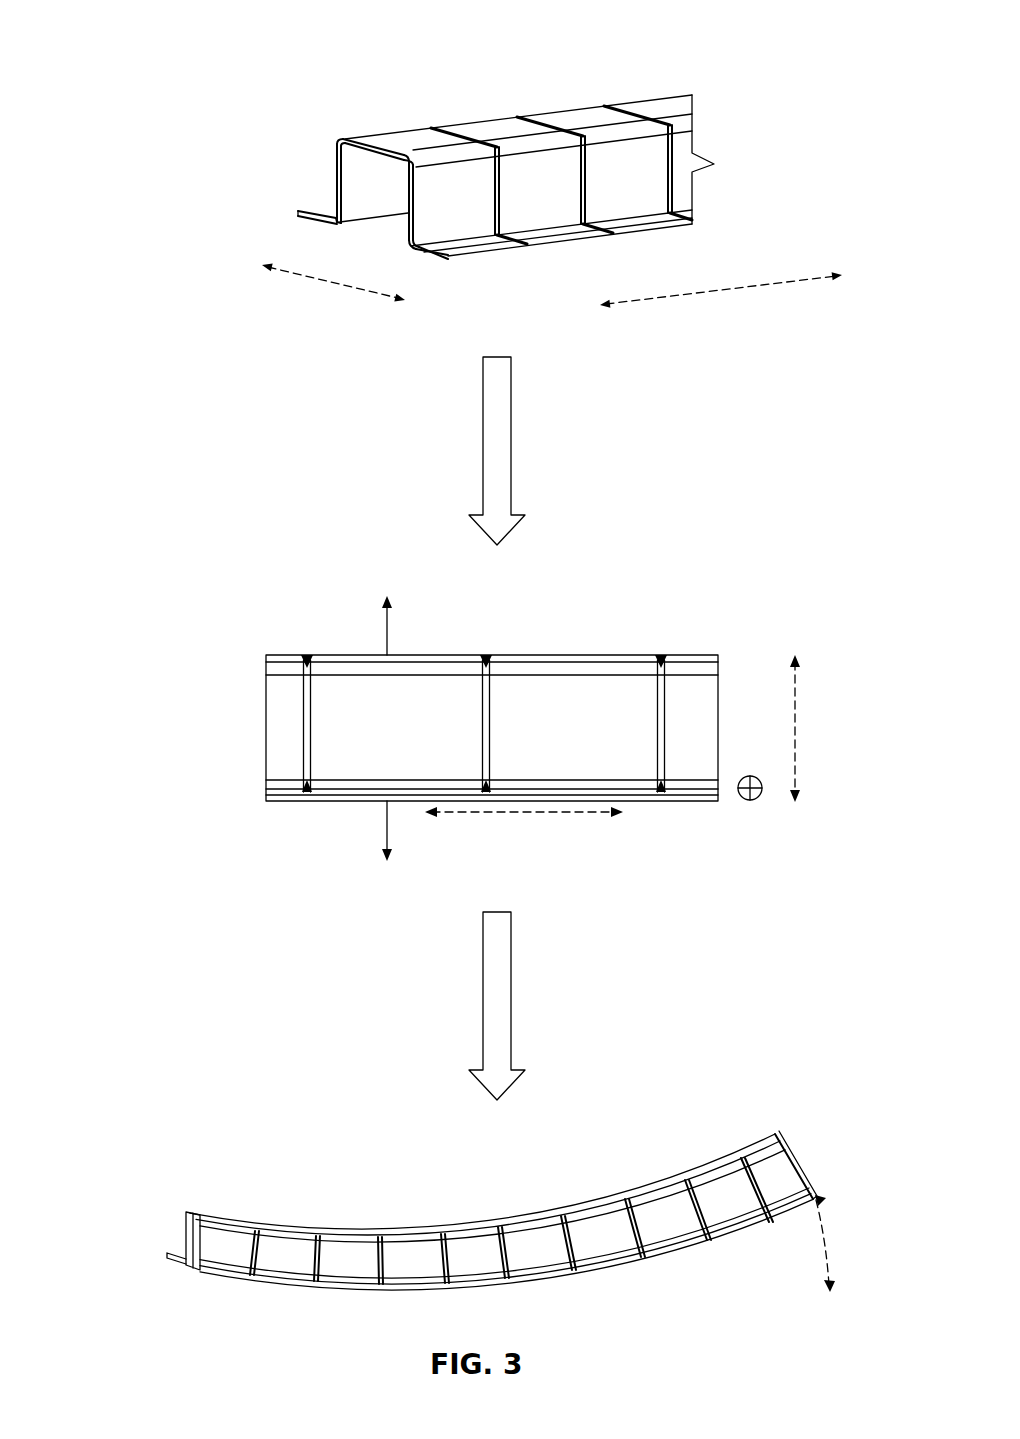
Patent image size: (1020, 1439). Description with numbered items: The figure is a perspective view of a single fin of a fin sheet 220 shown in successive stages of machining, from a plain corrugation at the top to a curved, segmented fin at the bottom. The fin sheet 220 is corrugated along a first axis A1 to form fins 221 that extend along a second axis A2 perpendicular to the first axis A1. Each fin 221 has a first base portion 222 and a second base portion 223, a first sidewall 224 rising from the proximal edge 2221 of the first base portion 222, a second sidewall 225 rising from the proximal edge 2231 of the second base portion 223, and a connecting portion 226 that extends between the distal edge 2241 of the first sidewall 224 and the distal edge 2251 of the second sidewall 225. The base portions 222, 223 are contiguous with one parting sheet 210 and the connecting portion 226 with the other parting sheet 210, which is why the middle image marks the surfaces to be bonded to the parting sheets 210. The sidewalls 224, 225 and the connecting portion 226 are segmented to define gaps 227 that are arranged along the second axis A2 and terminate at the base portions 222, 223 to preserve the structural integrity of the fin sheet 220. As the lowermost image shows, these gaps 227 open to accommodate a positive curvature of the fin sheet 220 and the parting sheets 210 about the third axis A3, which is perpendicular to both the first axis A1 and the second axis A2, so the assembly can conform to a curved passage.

The fin sheet 220 is at (202, 28).
The fin 221 is at (662, 108).
The first base portion 222 is at (316, 213).
The proximal edge of first base portion 2221 is at (356, 223).
The second base portion 223 is at (470, 260).
The proximal edge of second base portion 2231 is at (412, 255).
The first sidewall 224 is at (352, 163).
The distal edge of first sidewall 2241 is at (342, 140).
The second sidewall 225 is at (636, 187).
The distal edge of second sidewall 2251 is at (410, 158).
The connecting portion 226 is at (440, 142).
The gap 227 is at (306, 655).
The parting sheet 210 is at (383, 613).
The first axis A1 is at (318, 278).
The second axis A2 is at (740, 288).
The third axis A3 is at (795, 728).